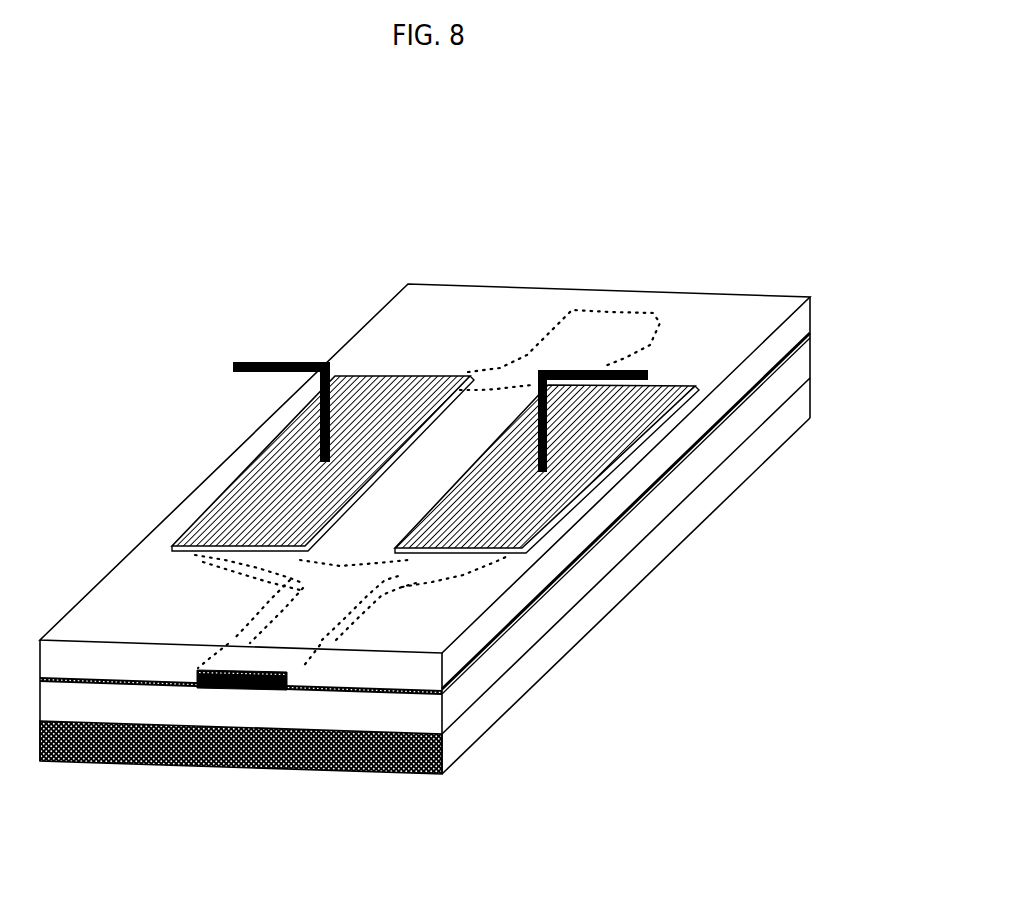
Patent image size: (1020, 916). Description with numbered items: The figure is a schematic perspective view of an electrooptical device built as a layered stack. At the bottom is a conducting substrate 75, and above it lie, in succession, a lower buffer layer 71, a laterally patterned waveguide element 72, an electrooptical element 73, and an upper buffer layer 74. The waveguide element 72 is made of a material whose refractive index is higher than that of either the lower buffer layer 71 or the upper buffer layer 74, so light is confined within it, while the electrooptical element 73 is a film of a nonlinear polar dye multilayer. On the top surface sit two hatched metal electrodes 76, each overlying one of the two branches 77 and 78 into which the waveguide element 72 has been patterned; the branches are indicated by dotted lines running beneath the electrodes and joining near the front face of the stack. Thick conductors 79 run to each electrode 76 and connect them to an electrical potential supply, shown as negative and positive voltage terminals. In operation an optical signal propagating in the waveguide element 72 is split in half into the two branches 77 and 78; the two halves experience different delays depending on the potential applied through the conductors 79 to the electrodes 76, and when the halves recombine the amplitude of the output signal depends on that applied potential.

The lower buffer layer 71 is at (800, 363).
The waveguide element 72 is at (229, 688).
The electrooptical element 73 is at (800, 325).
The upper buffer layer 74 is at (820, 310).
The conducting substrate 75 is at (700, 498).
The metal electrode 76 is at (458, 482).
The branch 77 is at (413, 590).
The branch 78 is at (228, 581).
The conductor 79 is at (288, 362).